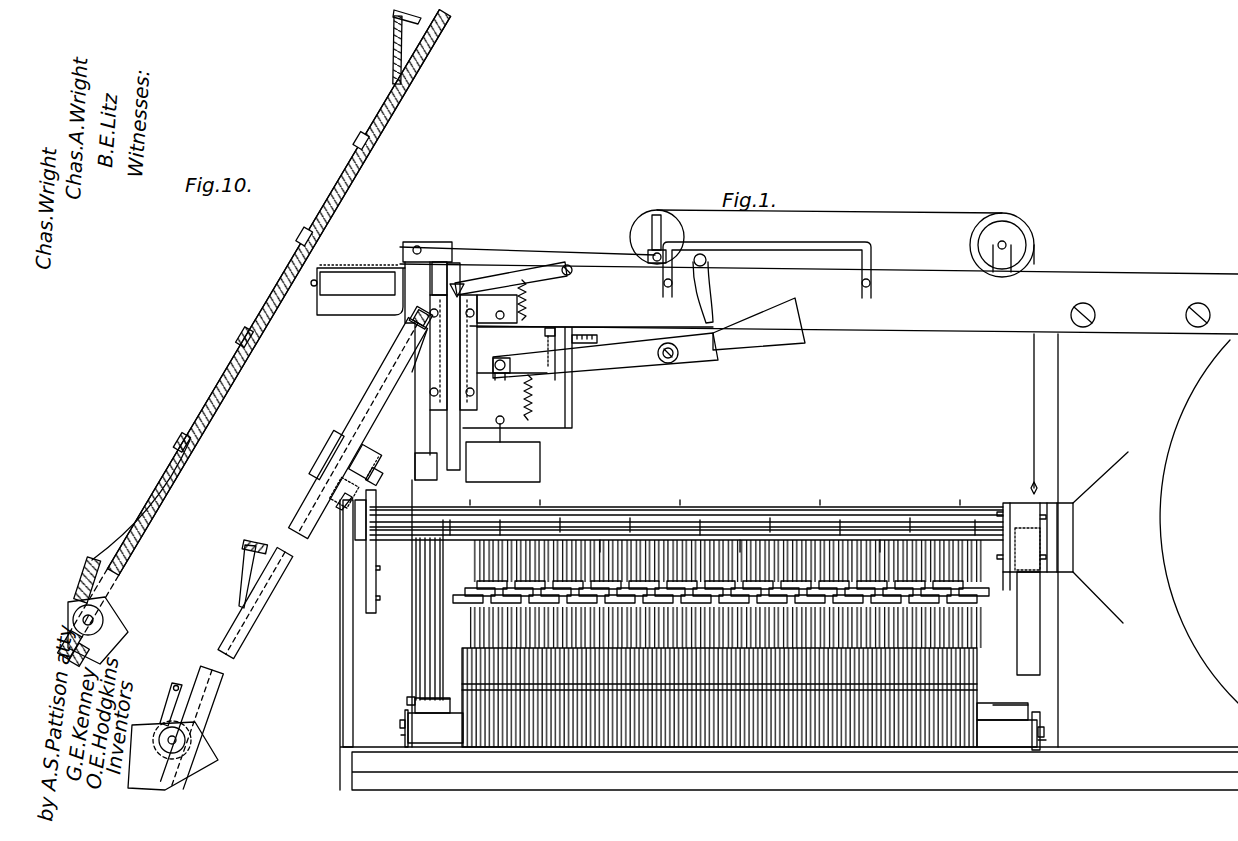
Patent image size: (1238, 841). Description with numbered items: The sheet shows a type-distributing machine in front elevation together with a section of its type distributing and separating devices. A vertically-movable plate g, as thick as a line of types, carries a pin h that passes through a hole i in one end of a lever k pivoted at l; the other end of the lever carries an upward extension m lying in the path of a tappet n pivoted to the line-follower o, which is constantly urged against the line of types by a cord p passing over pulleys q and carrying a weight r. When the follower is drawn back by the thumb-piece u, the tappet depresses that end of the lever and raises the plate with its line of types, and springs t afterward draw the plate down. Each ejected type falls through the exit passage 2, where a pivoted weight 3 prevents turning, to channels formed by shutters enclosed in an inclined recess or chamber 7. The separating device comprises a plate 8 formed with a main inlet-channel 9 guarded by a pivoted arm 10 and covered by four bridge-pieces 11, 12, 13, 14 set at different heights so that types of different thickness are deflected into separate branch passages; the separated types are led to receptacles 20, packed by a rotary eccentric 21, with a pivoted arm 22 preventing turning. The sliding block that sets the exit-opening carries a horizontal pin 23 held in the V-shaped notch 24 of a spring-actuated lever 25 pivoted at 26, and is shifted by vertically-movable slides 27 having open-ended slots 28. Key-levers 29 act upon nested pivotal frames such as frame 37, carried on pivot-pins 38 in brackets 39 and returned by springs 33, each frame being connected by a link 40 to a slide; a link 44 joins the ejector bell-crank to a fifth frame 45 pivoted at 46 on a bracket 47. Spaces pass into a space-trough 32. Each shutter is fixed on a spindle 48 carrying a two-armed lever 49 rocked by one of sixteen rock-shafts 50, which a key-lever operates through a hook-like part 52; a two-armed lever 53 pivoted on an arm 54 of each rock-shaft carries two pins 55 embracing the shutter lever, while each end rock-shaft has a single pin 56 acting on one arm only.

In FIG. 1, the type exit hole or passage 2 is at (426, 304).
In FIG. 1, the pivoted weight 3 is at (408, 320).
In FIG. 1, the recess or chamber 7 is at (378, 388).
In FIG. 10, the plate 8 is at (286, 292).
In FIG. 10, the main inlet-channel 9 is at (440, 30).
In FIG. 10, the pivoted weight or arm 10 is at (403, 48).
In FIG. 10, the bridge-piece 11 is at (167, 430).
In FIG. 10, the bridge-piece 12 is at (228, 324).
In FIG. 10, the bridge-piece 13 is at (293, 218).
In FIG. 10, the bridge-piece 14 is at (356, 120).
In FIG. 10, the receptacle 20 is at (90, 646).
In FIG. 10, the rotary eccentric 21 is at (104, 622).
In FIG. 10, the pivoted weight or arm 22 is at (82, 572).
In FIG. 1, the horizontal pin 23 is at (452, 288).
In FIG. 1, the V-shaped notch 24 is at (460, 286).
In FIG. 1, the spring-actuated lever 25 is at (530, 292).
In FIG. 1, the pivot 26 is at (572, 276).
In FIG. 1, the vertically-movable slide 27 is at (446, 440).
In FIG. 1, the open-ended slot 28 is at (462, 302).
In FIG. 1, the lever 29 is at (972, 652).
In FIG. 1, the space-trough 32 is at (358, 290).
In FIG. 1, the spring 33 is at (440, 698).
In FIG. 1, the frame or lever 37 is at (1028, 694).
In FIG. 1, the pivot-pin 38 is at (725, 594).
In FIG. 1, the bracket or lug 39 is at (410, 698).
In FIG. 1, the lever or link 40 is at (430, 552).
In FIG. 1, the link 44 is at (414, 628).
In FIG. 1, the frame or lever 45 is at (722, 730).
In FIG. 1, the pivot 46 is at (400, 722).
In FIG. 1, the lug or bracket 47 is at (400, 736).
In FIG. 1, the spindle 48 is at (307, 449).
In FIG. 1, the two-armed lever 49 is at (340, 497).
In FIG. 1, the rock-shaft 50 is at (568, 512).
In FIG. 1, the hook-like part 52 is at (820, 500).
In FIG. 1, the two-armed lever 53 is at (377, 493).
In FIG. 1, the arm 54 is at (379, 522).
In FIG. 1, the pin 55 is at (348, 512).
In FIG. 1, the pin 56 is at (394, 453).
In FIG. 1, the vertically-movable plate g is at (528, 329).
In FIG. 1, the pin h is at (497, 358).
In FIG. 1, the hole i is at (500, 383).
In FIG. 1, the lever k is at (622, 362).
In FIG. 1, the pivot l is at (665, 364).
In FIG. 1, the upward or lateral extension m is at (759, 324).
In FIG. 1, the tappet n is at (709, 286).
In FIG. 1, the line-follower o is at (568, 259).
In FIG. 1, the cord p is at (1030, 416).
In FIG. 1, the pulley q is at (975, 243).
In FIG. 1, the weight r is at (1022, 626).
In FIG. 1, the spring t is at (478, 420).
In FIG. 1, the thumb-piece u is at (650, 218).